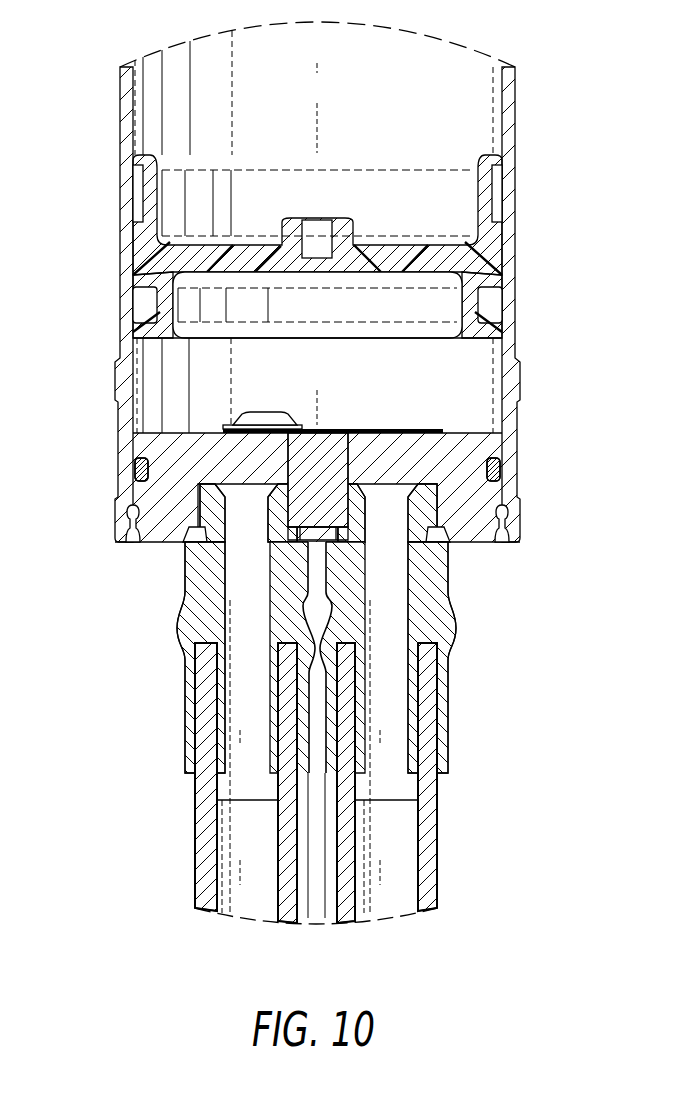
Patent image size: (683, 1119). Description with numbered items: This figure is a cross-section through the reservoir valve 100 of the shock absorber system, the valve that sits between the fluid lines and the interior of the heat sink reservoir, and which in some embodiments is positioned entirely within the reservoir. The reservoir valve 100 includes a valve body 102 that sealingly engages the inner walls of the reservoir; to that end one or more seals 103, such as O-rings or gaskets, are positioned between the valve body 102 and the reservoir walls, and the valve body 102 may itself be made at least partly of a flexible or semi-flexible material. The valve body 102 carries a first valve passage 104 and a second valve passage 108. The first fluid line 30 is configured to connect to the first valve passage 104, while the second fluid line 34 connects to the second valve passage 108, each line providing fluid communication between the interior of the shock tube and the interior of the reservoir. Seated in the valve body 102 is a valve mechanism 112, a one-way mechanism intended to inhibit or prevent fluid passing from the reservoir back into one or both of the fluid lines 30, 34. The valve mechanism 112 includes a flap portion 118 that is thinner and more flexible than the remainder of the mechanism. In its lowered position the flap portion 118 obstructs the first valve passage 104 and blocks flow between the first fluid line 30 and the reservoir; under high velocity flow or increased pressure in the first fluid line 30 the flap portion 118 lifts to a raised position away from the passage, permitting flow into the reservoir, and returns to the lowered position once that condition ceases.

The reservoir valve 100 is at (530, 533).
The valve body 102 is at (148, 444).
The seals 103 is at (133, 470).
The first valve passage 104 is at (418, 458).
The second valve passage 108 is at (130, 497).
The valve mechanism 112 is at (333, 432).
The flap portion 118 is at (420, 430).
The second fluid line 34 is at (245, 848).
The first fluid line 30 is at (410, 848).